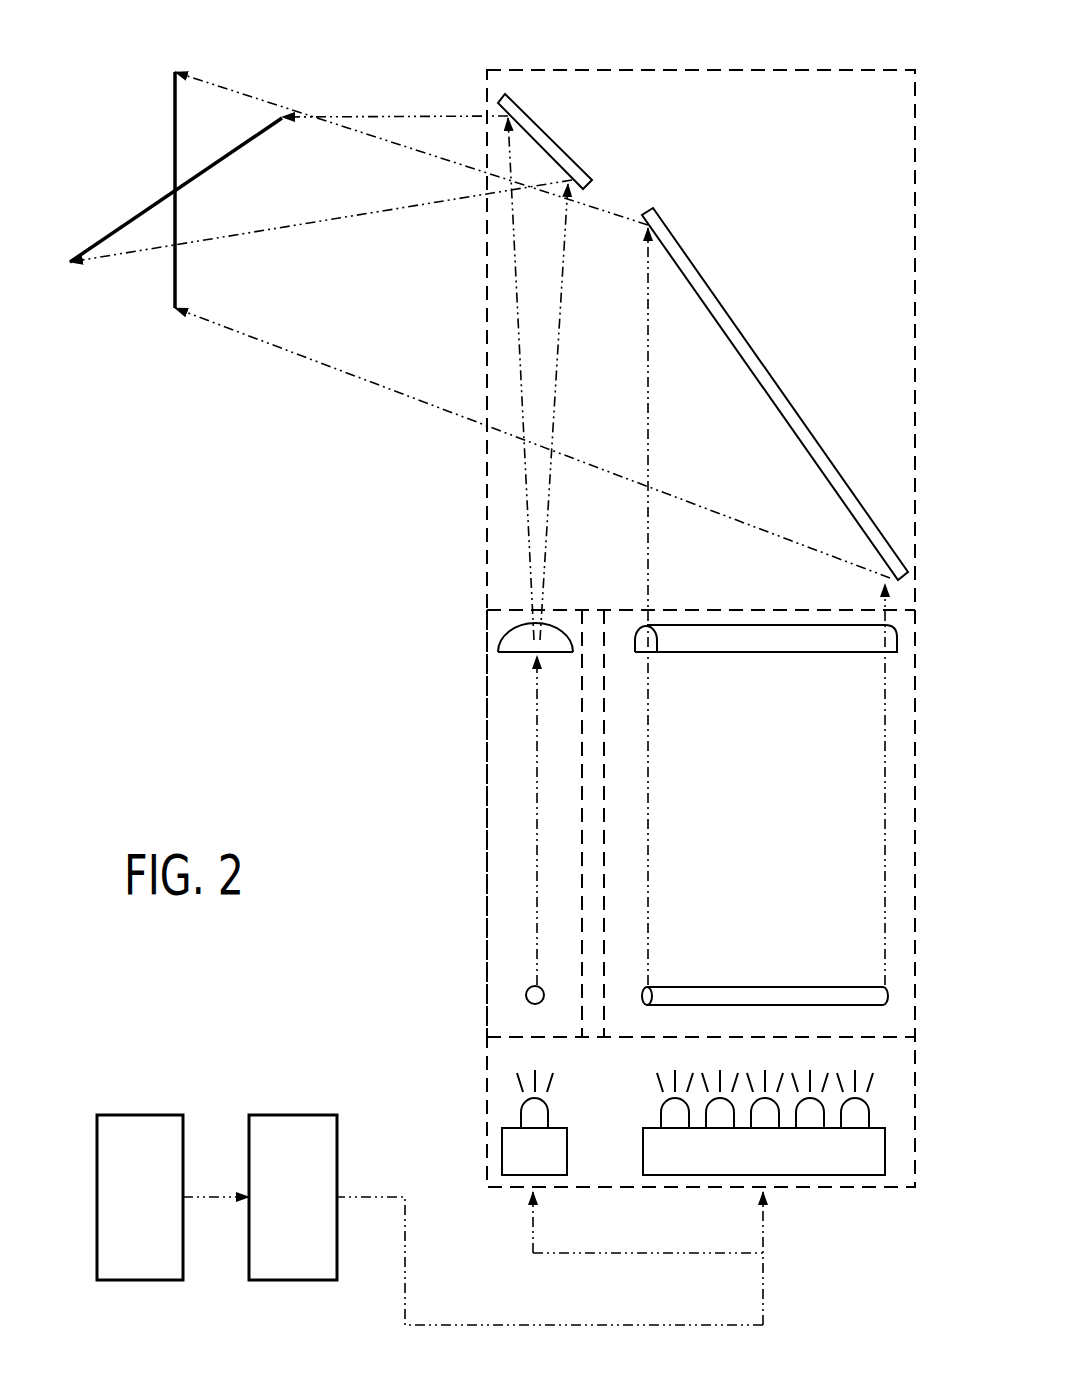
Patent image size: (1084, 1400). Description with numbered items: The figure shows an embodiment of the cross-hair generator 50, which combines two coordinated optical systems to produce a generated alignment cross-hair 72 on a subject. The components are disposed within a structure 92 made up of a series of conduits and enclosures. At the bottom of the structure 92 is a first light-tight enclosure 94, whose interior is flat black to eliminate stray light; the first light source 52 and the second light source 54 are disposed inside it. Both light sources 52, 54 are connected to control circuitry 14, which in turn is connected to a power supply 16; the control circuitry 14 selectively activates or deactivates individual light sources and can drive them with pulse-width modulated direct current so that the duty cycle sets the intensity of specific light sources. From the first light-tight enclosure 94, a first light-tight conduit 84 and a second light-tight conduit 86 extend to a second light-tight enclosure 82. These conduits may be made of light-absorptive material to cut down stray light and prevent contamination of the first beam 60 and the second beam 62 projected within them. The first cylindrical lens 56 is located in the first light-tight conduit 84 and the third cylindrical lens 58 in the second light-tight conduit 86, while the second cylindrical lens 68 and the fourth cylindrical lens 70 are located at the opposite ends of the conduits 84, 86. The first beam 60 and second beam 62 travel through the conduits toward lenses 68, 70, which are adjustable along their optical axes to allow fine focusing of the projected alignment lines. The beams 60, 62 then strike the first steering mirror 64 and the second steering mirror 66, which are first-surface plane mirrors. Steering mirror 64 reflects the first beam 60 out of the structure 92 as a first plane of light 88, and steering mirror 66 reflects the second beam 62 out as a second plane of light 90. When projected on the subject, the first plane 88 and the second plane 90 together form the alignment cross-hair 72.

The control circuitry 14 is at (288, 1282).
The power supply 16 is at (128, 1282).
The cross-hair generator 50 is at (318, 658).
The first light source 52 is at (492, 1127).
The second light source 54 is at (645, 1150).
The first cylindrical lens 56 is at (525, 992).
The third cylindrical lens 58 is at (645, 992).
The first beam of light 60 is at (535, 778).
The second beam of light 62 is at (875, 820).
The first steering mirror 64 is at (550, 134).
The second steering mirror 66 is at (797, 408).
The second cylindrical lens 68 is at (502, 642).
The fourth cylindrical lens 70 is at (818, 652).
The alignment cross-hair 72 is at (175, 186).
The second light-tight enclosure 82 is at (703, 70).
The first light-tight conduit 84 is at (502, 720).
The second light-tight conduit 86 is at (900, 762).
The first plane of light 88 is at (410, 128).
The second plane of light 90 is at (330, 348).
The structure 92 is at (486, 668).
The first light-tight enclosure 94 is at (500, 1097).